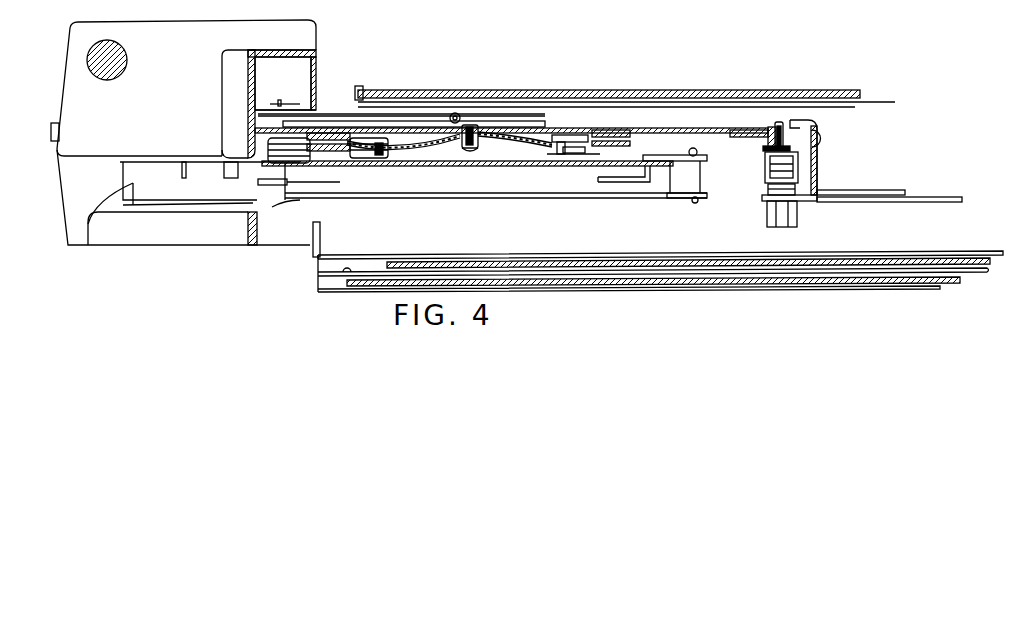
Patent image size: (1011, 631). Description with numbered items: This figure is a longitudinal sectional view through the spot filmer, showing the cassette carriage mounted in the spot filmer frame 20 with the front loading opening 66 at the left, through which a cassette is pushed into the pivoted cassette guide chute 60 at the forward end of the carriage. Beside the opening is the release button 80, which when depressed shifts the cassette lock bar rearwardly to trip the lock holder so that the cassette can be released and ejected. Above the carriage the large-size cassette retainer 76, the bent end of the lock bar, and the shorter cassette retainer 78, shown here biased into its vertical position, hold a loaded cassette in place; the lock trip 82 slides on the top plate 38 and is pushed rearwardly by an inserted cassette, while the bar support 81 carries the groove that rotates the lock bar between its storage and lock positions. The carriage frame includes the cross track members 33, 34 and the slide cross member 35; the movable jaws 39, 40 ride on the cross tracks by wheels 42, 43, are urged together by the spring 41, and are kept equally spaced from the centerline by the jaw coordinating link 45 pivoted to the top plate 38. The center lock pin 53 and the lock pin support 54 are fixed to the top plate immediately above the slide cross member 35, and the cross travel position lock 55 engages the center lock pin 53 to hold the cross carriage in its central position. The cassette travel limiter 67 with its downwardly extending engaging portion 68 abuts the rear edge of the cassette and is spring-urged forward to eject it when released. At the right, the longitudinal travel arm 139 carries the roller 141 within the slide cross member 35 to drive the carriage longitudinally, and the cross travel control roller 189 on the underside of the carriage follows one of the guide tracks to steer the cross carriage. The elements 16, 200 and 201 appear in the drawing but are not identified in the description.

The rail 16 is at (607, 92).
The spot filmer frame 20 is at (312, 252).
The frame cross track member 33 is at (344, 133).
The frame cross track member 34 is at (628, 142).
The slide cross member 35 is at (812, 152).
The top plate 38 is at (508, 132).
The movable jaw 39 is at (547, 162).
The movable jaw 40 is at (402, 164).
The spring 41 is at (455, 113).
The wheel 42 is at (570, 133).
The wheel 43 is at (350, 137).
The jaw coordinating link 45 is at (497, 142).
The center lock pin 53 is at (792, 120).
The lock pin support 54 is at (766, 146).
The cross travel position lock 55 is at (749, 130).
The cassette guide chute 60 is at (88, 222).
The front loading opening 66 is at (76, 188).
The cassette travel limiter 67 is at (700, 155).
The cassette engaging portion 68 is at (600, 183).
The large-size cassette retainer 76 is at (182, 172).
The shorter cassette retainer 78 is at (230, 163).
The release button 80 is at (50, 129).
The bar support 81 is at (390, 127).
The lock trip 82 is at (500, 137).
The longitudinal travel arm 139 is at (962, 200).
The roller 141 is at (777, 174).
The cross travel control roller 189 is at (797, 208).
The extension rail 200 is at (520, 263).
The lower rail 201 is at (345, 272).